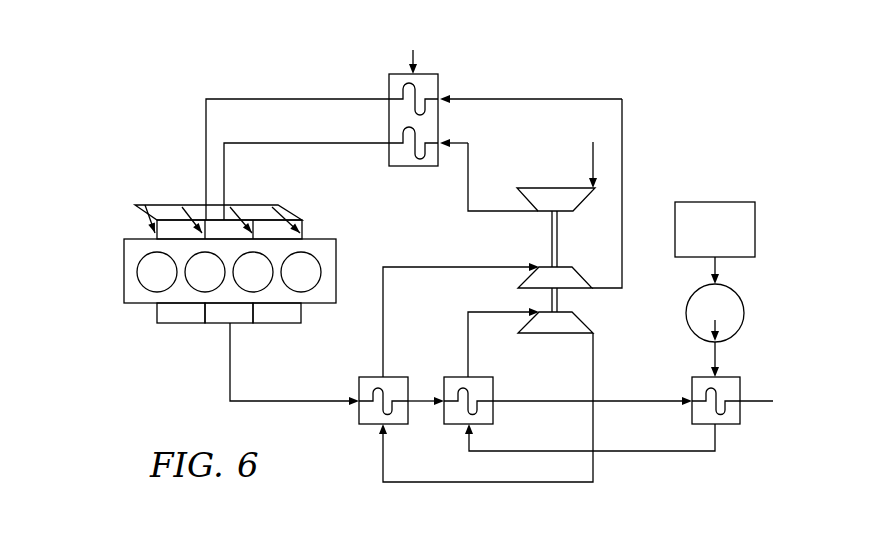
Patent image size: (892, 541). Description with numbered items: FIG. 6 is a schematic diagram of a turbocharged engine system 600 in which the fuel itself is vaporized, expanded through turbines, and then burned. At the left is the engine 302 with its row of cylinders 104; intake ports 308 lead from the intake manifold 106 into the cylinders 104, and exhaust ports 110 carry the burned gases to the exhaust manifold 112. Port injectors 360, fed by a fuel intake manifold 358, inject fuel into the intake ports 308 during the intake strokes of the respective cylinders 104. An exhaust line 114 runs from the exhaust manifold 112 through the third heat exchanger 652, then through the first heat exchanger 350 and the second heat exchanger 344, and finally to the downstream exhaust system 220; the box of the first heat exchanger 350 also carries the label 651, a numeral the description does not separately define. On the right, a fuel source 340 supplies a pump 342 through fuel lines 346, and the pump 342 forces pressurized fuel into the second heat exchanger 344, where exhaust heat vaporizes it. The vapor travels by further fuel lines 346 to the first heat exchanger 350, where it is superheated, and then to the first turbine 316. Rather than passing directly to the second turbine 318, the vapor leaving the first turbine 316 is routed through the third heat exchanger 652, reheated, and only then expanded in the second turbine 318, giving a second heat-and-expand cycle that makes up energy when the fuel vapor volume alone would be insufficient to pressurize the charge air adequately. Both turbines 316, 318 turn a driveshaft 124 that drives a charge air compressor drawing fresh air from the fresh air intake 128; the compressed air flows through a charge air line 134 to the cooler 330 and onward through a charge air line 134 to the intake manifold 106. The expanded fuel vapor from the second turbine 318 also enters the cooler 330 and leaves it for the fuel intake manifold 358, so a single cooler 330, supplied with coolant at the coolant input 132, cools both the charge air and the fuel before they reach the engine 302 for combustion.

The turbocharged engine system 600 is at (320, 32).
The engine 302 is at (55, 258).
The cylinders 104 is at (145, 272).
The intake manifold 106 is at (272, 207).
The exhaust ports 110 is at (157, 315).
The exhaust manifold 112 is at (285, 325).
The exhaust line 114 is at (230, 373).
The driveshaft 124 is at (552, 242).
The fresh air intake 128 is at (593, 142).
The coolant input 132 is at (413, 50).
The charge air line 134 is at (347, 145).
The downstream exhaust system 220 is at (763, 401).
The intake ports 308 is at (158, 223).
The first turbine 316 is at (557, 324).
The second turbine 318 is at (570, 282).
The cooler 330 is at (428, 82).
The fuel source 340 is at (730, 212).
The pump 342 is at (735, 317).
The second heat exchanger 344 is at (730, 418).
The fuel lines 346 is at (270, 99).
The first heat exchanger 350 is at (455, 418).
The fuel intake manifold 358 is at (146, 206).
The port injectors 360 is at (136, 212).
The heat exchanger 651 is at (487, 414).
The third heat exchanger 652 is at (368, 418).